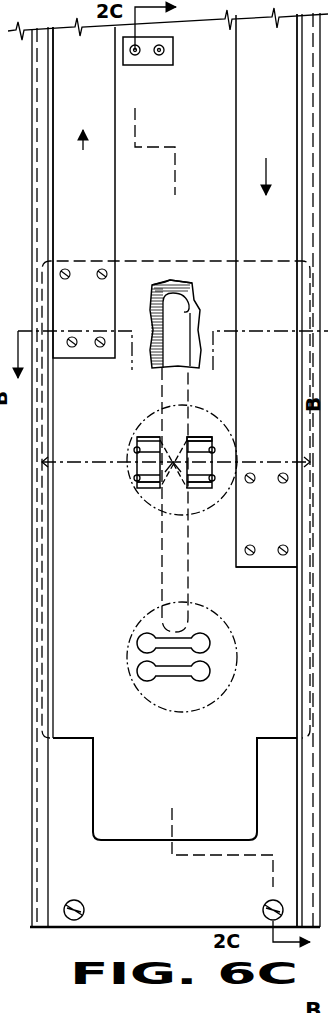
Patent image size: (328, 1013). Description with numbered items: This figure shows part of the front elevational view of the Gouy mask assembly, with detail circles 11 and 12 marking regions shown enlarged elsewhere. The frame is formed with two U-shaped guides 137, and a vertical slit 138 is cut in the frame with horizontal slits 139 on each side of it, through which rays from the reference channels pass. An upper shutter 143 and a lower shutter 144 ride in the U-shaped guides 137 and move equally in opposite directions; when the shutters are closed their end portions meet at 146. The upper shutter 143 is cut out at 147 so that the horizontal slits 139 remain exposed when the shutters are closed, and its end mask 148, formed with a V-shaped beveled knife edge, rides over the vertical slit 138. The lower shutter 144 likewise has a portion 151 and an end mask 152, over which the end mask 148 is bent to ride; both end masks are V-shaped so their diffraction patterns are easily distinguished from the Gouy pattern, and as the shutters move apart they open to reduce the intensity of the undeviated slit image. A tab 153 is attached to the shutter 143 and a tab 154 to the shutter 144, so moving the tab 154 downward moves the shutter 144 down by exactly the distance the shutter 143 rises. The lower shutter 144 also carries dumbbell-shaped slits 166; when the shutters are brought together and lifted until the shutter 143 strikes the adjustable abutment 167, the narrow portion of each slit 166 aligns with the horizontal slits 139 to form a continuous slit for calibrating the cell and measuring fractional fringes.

The detail view circle 11 is at (132, 424).
The detail view circle 12 is at (132, 616).
The U-shaped guides 137 is at (43, 179).
The vertical slit 138 is at (185, 312).
The horizontal slits 139 is at (134, 449).
The upper shutter 143 is at (157, 268).
The lower shutter 144 is at (265, 608).
The meeting point of shutter end portions 146 is at (81, 464).
The cut-out of upper shutter 147 is at (150, 436).
The end mask 148 is at (185, 465).
The portion of lower shutter 151 is at (152, 488).
The end mask 152 is at (184, 437).
The tab 153 is at (90, 218).
The tab 154 is at (277, 131).
The dumbbell-shaped slits 166 is at (211, 673).
The abutment 167 is at (155, 65).